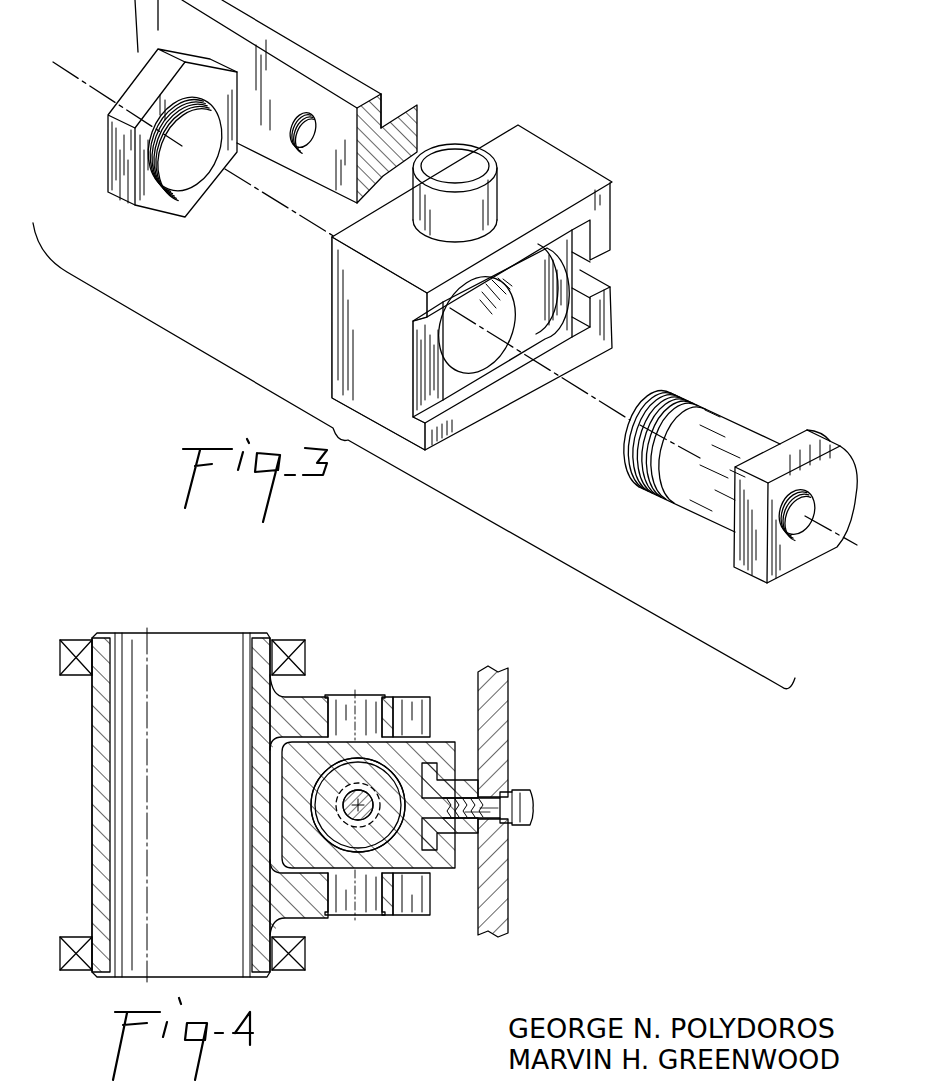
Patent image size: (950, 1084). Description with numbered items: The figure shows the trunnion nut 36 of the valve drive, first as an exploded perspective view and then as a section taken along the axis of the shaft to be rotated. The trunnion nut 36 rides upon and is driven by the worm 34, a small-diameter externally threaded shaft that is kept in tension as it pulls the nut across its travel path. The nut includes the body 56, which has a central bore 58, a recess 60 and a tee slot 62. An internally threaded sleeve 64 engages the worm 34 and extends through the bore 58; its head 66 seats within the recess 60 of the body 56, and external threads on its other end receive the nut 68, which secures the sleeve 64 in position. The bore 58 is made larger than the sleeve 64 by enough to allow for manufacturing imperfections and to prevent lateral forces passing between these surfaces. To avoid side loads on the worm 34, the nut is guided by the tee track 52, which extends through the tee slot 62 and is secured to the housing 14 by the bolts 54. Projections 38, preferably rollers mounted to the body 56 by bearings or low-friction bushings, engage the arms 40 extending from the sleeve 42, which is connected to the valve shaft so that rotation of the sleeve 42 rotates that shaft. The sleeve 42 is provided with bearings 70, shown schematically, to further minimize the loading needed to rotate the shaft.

In FIG. 4, the housing 14 is at (503, 900).
In FIG. 4, the worm 34 is at (360, 806).
In FIG. 3, the trunnion nut 36 is at (443, 287).
In FIG. 4, the trunnion nut 36 is at (447, 760).
In FIG. 3, the projections 38 is at (462, 142).
In FIG. 4, the projections 38 is at (350, 703).
In FIG. 4, the arms 40 is at (415, 710).
In FIG. 4, the sleeve 42 is at (92, 808).
In FIG. 3, the tee track 52 is at (333, 73).
In FIG. 4, the tee track 52 is at (467, 783).
In FIG. 4, the bolts 54 is at (533, 810).
In FIG. 3, the body 56 is at (353, 307).
In FIG. 3, the central bore 58 is at (477, 353).
In FIG. 3, the recess 60 is at (458, 393).
In FIG. 3, the tee slot 62 is at (582, 316).
In FIG. 3, the sleeve 64 is at (735, 427).
In FIG. 3, the head 66 is at (733, 577).
In FIG. 3, the nut 68 is at (163, 216).
In FIG. 4, the bearings 70 is at (72, 677).